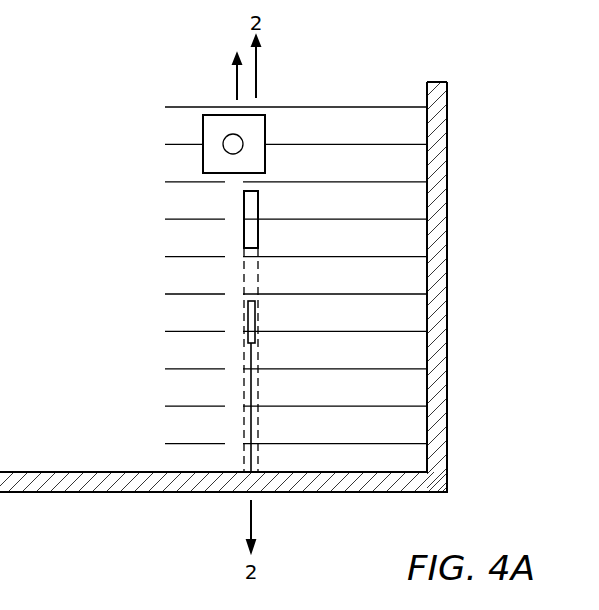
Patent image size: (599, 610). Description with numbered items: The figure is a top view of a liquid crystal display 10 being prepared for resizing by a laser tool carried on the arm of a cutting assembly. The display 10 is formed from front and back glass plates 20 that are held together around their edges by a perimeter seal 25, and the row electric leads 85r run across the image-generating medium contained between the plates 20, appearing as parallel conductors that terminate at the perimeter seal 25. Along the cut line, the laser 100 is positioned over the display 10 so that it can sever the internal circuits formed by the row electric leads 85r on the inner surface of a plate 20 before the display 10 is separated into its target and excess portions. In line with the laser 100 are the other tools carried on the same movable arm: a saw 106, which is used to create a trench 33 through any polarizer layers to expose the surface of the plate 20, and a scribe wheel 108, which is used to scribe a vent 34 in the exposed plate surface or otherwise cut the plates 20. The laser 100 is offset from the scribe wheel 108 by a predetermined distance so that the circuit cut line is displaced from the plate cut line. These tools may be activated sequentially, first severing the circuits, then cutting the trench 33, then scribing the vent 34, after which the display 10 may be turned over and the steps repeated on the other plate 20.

The liquid crystal display 10 is at (274, 305).
The plate 20 is at (405, 430).
The perimeter seal 25 is at (118, 482).
The row electric leads 85r is at (355, 106).
The laser 100 is at (200, 127).
The saw 106 is at (244, 203).
The scribe wheel 108 is at (248, 327).
The trench 33 is at (247, 397).
The vent 34 is at (248, 435).